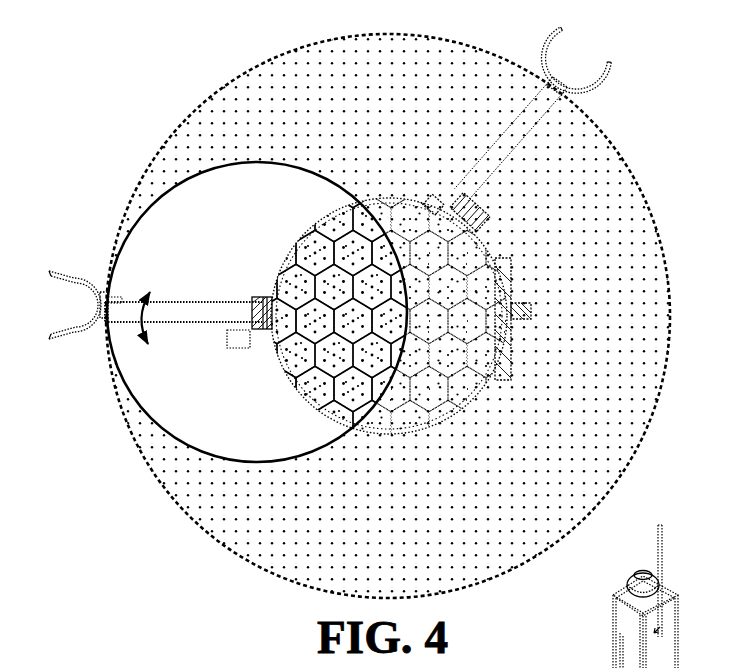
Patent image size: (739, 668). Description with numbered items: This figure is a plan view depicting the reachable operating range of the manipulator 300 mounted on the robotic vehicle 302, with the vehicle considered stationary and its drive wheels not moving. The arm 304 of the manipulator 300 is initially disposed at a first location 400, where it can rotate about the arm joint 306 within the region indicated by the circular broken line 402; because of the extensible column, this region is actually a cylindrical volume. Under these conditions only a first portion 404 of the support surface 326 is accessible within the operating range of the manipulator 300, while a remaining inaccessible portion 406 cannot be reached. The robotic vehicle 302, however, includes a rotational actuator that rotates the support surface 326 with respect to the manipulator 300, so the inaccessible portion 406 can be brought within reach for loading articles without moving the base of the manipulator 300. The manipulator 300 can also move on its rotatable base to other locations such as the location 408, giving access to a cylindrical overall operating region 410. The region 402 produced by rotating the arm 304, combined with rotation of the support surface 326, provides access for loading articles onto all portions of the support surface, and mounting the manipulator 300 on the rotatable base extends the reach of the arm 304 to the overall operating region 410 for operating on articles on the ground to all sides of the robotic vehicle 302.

The manipulator 300 is at (132, 293).
The robotic vehicle 302 is at (419, 265).
The arm 304 is at (151, 312).
The arm joint 306 is at (257, 313).
The support surface 326 is at (389, 265).
The first location 400 is at (100, 339).
The circular broken line 402 is at (137, 213).
The first portion 404 is at (425, 138).
The inaccessible portion 406 is at (398, 220).
The location 408 is at (590, 100).
The overall operating region 410 is at (197, 110).